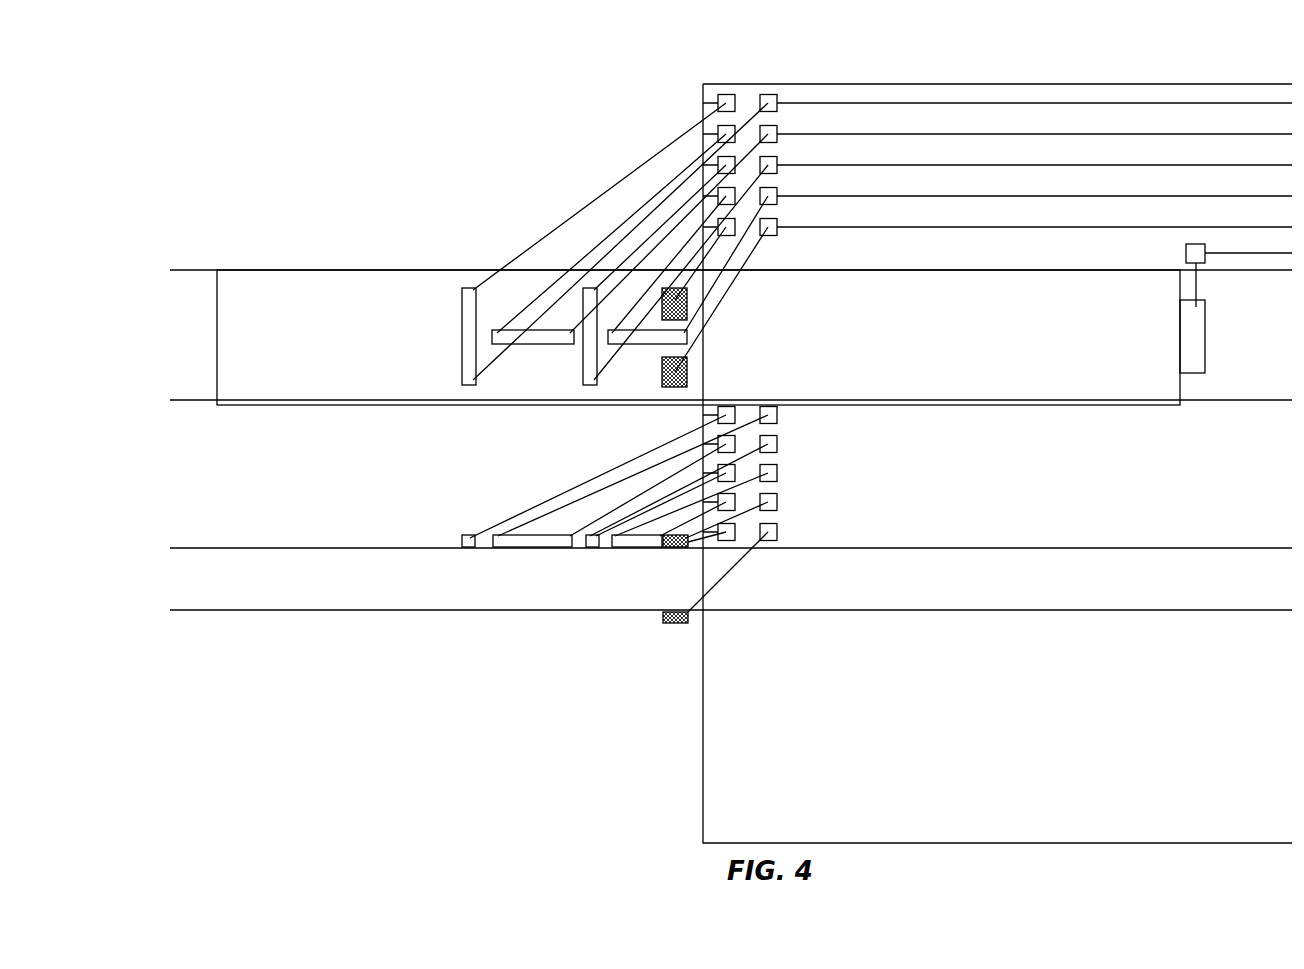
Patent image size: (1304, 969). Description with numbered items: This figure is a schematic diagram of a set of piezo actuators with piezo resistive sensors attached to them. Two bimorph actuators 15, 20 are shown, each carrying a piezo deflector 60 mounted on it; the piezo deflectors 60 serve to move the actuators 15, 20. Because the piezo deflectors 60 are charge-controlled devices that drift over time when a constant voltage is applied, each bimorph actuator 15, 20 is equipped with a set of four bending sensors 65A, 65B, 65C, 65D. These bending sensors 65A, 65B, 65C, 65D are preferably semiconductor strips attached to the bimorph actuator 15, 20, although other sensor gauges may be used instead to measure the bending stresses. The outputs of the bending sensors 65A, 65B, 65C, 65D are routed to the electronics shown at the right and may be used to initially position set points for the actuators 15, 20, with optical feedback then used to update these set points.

The actuator 15 is at (190, 268).
The actuator 20 is at (294, 576).
The piezo deflector 60 is at (307, 269).
The bending sensor 65A is at (466, 388).
The bending sensor 65B is at (536, 348).
The bending sensor 65C is at (580, 380).
The bending sensor 65D is at (639, 348).